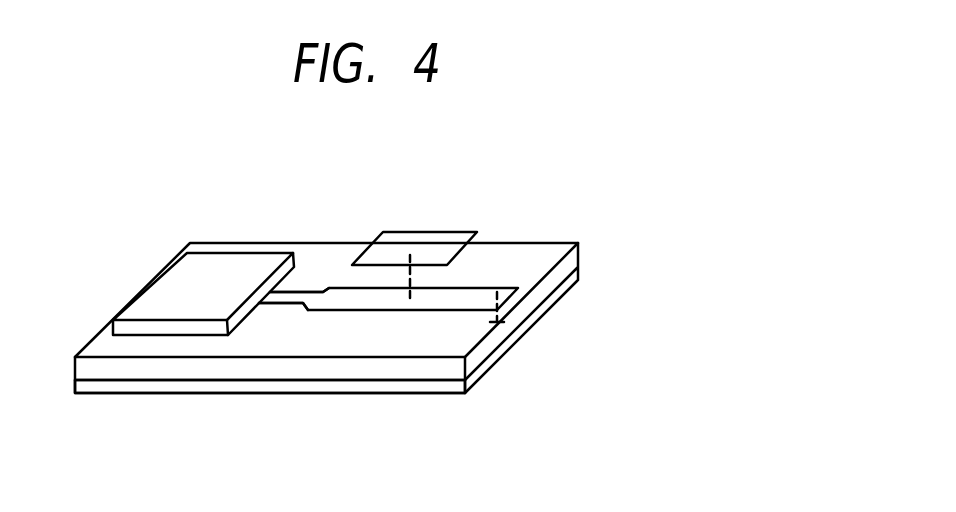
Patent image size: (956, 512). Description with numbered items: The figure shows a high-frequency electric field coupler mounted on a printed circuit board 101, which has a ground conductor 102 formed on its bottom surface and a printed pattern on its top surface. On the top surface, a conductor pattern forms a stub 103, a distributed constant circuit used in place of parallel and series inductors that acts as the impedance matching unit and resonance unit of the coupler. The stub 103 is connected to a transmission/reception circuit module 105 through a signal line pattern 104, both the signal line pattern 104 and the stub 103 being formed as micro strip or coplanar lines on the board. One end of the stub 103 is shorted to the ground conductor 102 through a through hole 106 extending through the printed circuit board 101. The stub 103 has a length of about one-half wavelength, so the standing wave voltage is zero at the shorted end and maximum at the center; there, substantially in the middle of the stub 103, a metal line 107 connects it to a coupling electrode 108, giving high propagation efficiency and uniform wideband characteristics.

The printed circuit board 101 is at (592, 237).
The ground conductor 102 is at (97, 395).
The stub 103 is at (367, 293).
The signal line pattern 104 is at (300, 292).
The transmission/reception circuit module 105 is at (175, 285).
The through hole 106 is at (500, 320).
The metal line 107 is at (413, 286).
The coupling electrode 108 is at (402, 242).